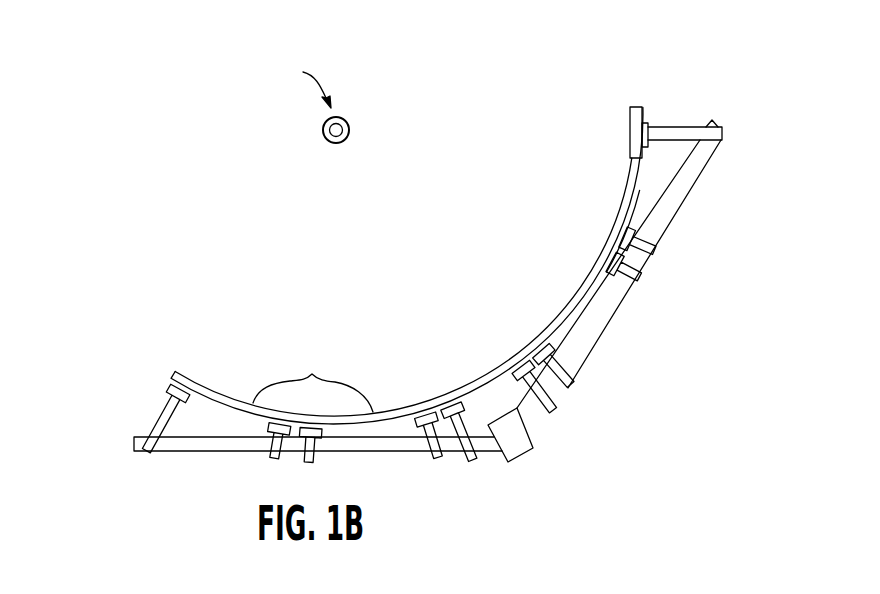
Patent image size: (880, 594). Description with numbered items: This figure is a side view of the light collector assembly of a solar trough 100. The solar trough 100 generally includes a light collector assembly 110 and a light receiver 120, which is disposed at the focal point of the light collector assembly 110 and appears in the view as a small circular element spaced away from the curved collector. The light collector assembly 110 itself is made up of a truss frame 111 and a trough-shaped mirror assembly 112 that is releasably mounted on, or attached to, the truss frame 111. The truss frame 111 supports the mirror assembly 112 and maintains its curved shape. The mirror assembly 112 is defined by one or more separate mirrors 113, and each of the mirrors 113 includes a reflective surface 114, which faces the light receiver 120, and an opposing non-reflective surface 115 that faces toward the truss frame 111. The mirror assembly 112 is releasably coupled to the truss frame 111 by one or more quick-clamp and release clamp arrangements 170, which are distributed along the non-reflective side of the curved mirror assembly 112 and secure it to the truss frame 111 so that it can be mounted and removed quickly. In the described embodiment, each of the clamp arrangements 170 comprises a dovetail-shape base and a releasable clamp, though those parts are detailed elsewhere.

The solar trough 100 is at (140, 176).
The light collector assembly 110 is at (617, 191).
The truss frame 111 is at (698, 172).
The trough-shaped mirror assembly 112 is at (634, 107).
The mirror 113 is at (316, 368).
The reflective surface 114 is at (578, 298).
The non-reflective surface 115 is at (632, 205).
The light receiver 120 is at (350, 131).
The quick-clamp and release clamp arrangement 170 is at (606, 280).